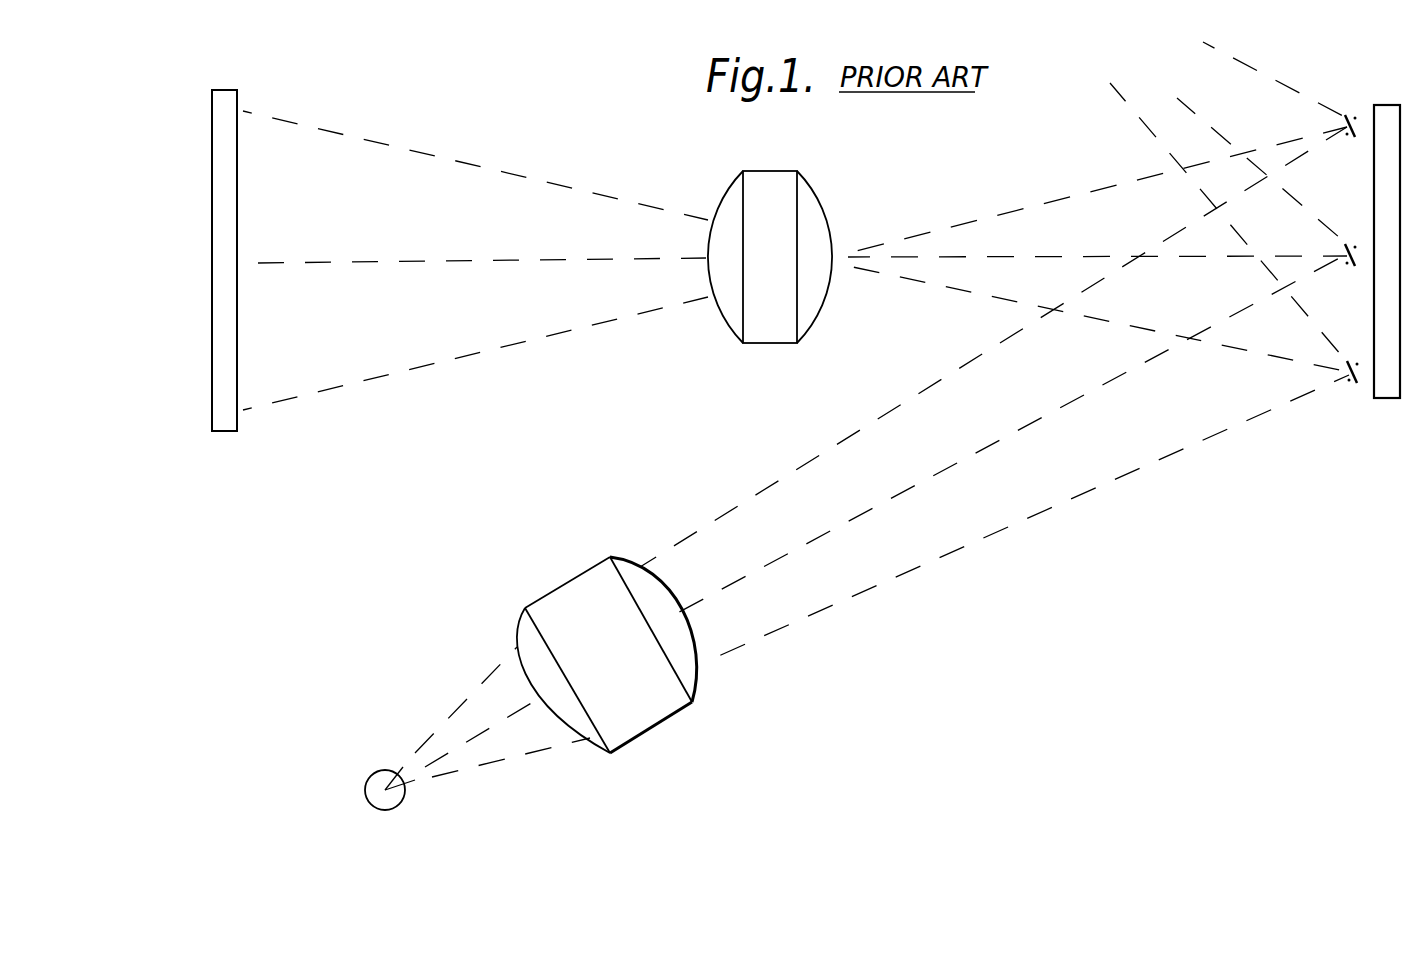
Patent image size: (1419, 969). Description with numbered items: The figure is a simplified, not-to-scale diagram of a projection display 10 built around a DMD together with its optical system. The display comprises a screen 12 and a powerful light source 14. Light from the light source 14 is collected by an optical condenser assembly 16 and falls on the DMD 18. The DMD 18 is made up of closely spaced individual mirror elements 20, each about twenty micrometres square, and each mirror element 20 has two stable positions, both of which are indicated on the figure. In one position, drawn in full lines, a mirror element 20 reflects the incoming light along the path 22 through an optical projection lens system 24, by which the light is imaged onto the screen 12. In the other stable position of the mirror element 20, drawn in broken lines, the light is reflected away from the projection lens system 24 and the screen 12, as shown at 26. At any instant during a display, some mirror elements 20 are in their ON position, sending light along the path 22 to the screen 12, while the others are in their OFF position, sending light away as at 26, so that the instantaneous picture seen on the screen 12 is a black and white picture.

The projection display 10 is at (428, 561).
The screen 12 is at (231, 425).
The light source 14 is at (380, 774).
The optical condenser assembly 16 is at (590, 573).
The DMD 18 is at (1389, 110).
The mirror element 20 is at (1347, 116).
The path 22 is at (957, 226).
The optical projection lens system 24 is at (766, 330).
The reflected-away light 26 is at (1178, 97).